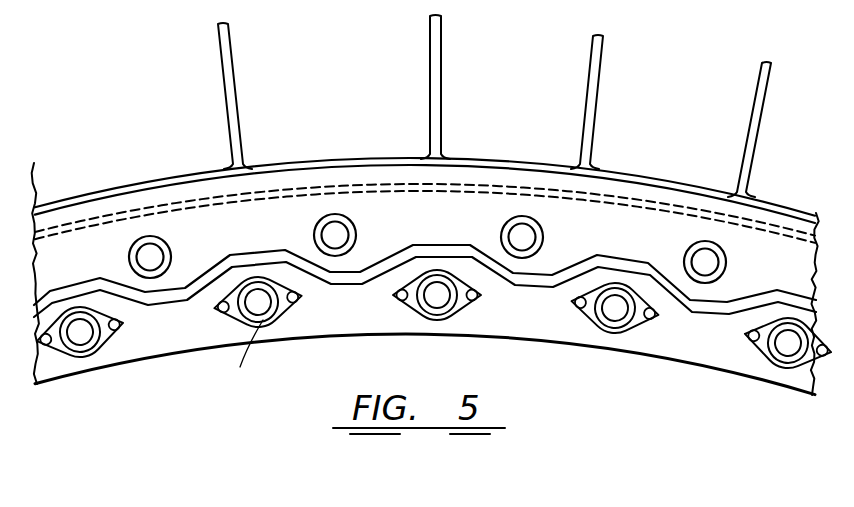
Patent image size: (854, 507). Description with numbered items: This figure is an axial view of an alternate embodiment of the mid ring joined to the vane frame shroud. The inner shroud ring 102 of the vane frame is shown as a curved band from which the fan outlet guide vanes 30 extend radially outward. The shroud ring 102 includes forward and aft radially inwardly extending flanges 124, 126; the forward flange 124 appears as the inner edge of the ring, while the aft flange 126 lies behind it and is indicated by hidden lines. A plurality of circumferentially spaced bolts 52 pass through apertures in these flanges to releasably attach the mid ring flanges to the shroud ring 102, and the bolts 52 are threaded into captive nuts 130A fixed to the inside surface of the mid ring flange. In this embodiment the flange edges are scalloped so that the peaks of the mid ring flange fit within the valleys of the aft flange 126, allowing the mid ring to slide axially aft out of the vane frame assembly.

The fan outlet guide vanes 30 is at (434, 100).
The inner shroud ring 102 is at (308, 163).
The aft radially inwardly extending flange 126 is at (667, 202).
The bolts 52 is at (503, 224).
The captive nuts 130A is at (100, 340).
The forward radially inwardly extending flange 124 is at (658, 340).